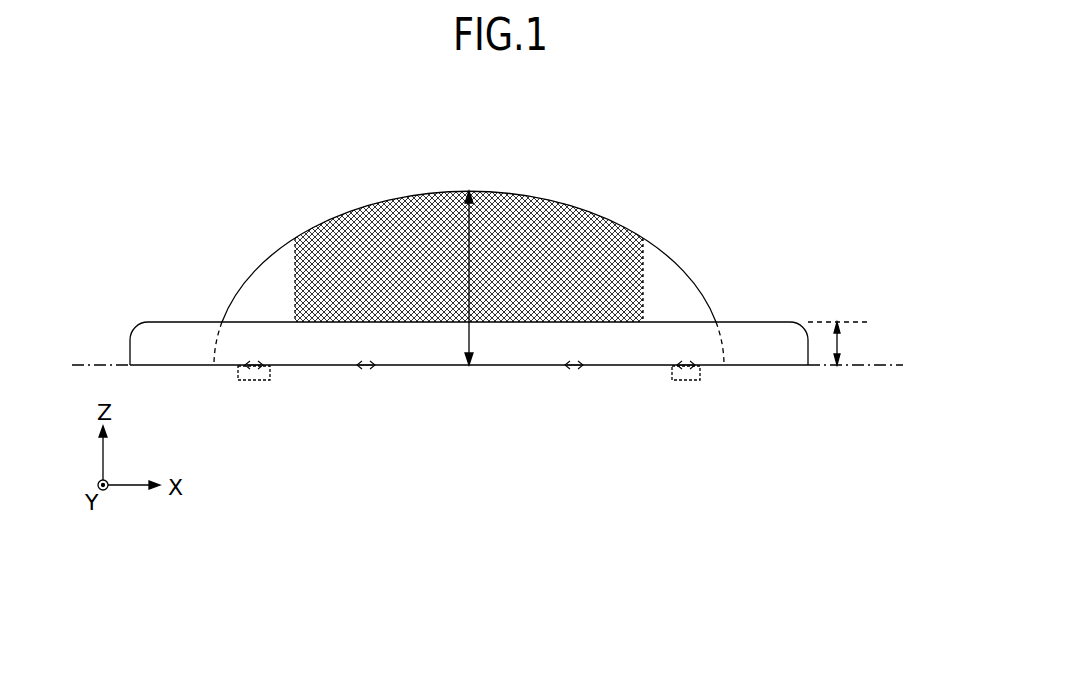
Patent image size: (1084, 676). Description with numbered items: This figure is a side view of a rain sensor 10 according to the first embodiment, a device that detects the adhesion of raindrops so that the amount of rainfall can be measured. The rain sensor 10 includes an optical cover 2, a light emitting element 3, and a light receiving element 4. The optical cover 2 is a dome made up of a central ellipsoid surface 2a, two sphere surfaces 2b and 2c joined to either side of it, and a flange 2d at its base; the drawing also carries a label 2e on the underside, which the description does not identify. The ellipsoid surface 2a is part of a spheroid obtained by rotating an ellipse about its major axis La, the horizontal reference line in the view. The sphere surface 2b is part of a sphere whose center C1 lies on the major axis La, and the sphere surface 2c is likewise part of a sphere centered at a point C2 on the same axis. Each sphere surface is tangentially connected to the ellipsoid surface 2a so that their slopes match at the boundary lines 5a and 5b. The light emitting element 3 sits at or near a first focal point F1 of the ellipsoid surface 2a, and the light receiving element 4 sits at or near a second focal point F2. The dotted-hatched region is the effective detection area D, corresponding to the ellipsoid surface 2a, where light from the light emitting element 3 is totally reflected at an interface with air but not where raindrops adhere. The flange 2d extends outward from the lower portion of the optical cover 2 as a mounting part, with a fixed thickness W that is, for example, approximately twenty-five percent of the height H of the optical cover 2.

The rain sensor 10 is at (213, 152).
The optical cover 2 is at (618, 211).
The ellipsoid surface 2a is at (420, 210).
The sphere surface 2b is at (260, 284).
The sphere surface 2c is at (677, 283).
The flange 2d is at (765, 329).
The bottom surface of lens 2e is at (447, 367).
The light emitting element 3 is at (250, 381).
The light receiving element 4 is at (687, 381).
The boundary line 5a is at (290, 236).
The boundary line 5b is at (650, 236).
The effective detection area D is at (538, 215).
The height of the optical cover H is at (473, 333).
The thickness of the flange W is at (851, 343).
The major axis La is at (502, 370).
The first focal point F1 is at (270, 377).
The second focal point F2 is at (677, 381).
The center of the sphere surface C1 is at (370, 378).
The center of the sphere surface C2 is at (569, 372).